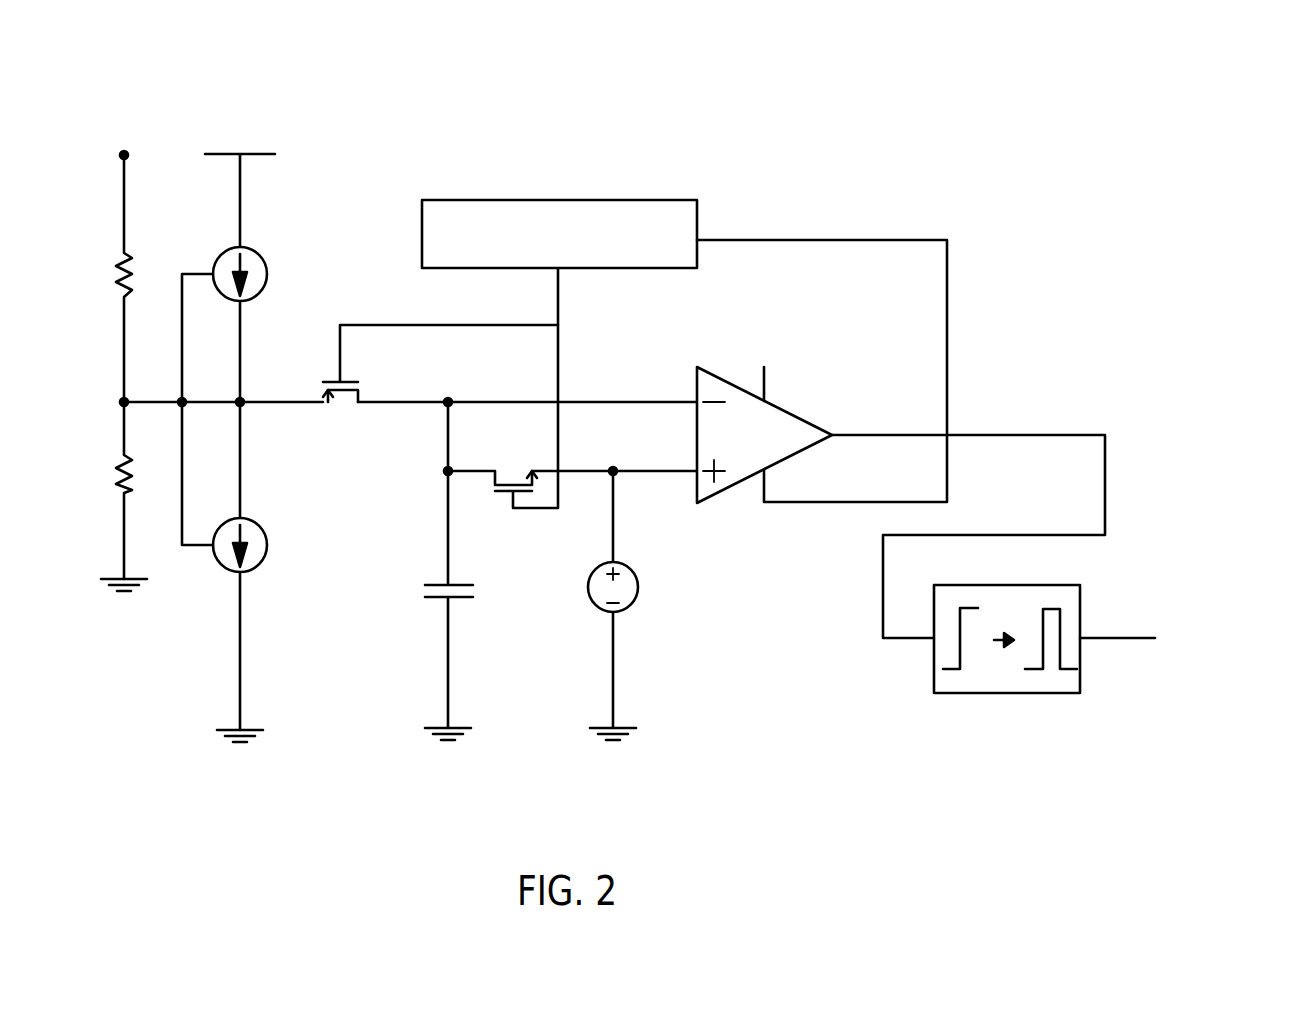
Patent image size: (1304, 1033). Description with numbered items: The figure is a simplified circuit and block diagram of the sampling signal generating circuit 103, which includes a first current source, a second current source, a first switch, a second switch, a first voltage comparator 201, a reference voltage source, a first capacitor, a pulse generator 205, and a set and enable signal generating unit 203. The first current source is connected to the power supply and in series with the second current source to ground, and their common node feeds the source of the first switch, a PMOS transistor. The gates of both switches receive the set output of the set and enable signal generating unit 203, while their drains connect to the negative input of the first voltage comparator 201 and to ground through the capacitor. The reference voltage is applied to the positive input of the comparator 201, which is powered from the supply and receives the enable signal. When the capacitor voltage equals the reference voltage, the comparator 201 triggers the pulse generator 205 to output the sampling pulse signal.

The sampling signal generating circuit 103 is at (1018, 158).
The first voltage comparator 201 is at (782, 447).
The set and enable signal generating unit 203 is at (685, 198).
The pulse generator 205 is at (1057, 597).